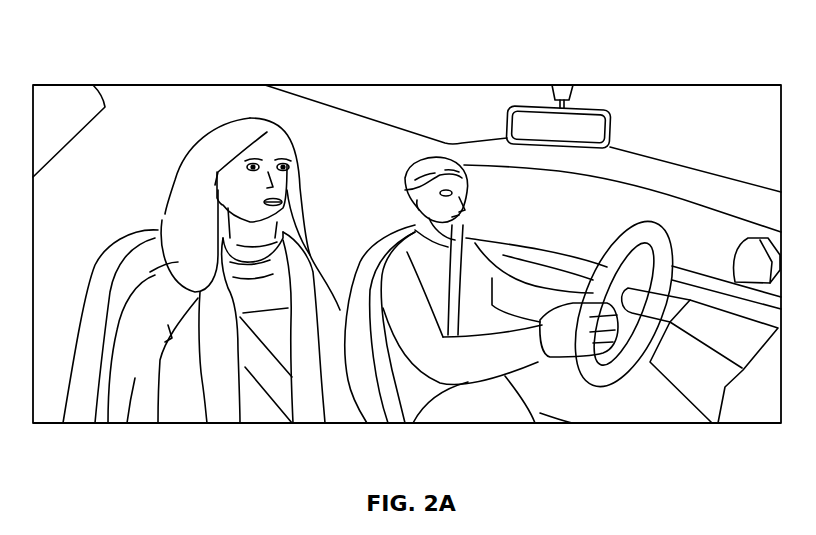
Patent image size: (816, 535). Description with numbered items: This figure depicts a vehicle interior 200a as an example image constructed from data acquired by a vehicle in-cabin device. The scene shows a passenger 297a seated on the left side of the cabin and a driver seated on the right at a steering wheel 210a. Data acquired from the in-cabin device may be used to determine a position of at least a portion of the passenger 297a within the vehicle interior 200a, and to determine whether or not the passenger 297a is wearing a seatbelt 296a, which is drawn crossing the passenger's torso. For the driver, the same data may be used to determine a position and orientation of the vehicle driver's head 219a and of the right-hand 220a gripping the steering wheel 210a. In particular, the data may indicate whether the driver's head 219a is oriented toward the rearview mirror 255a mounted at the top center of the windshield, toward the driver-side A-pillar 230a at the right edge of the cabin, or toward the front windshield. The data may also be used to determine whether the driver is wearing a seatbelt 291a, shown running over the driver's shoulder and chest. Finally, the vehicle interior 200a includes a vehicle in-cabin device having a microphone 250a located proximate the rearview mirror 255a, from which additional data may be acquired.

The vehicle interior 200a is at (113, 50).
The vehicle driver's head 219a is at (440, 170).
The seatbelt 291a is at (462, 265).
The microphone 250a is at (563, 97).
The rearview mirror 255a is at (597, 128).
The steering wheel 210a is at (655, 232).
The driver-side A-pillar 230a is at (717, 192).
The passenger 297a is at (140, 377).
The seatbelt 296a is at (268, 377).
The right-hand 220a is at (583, 333).